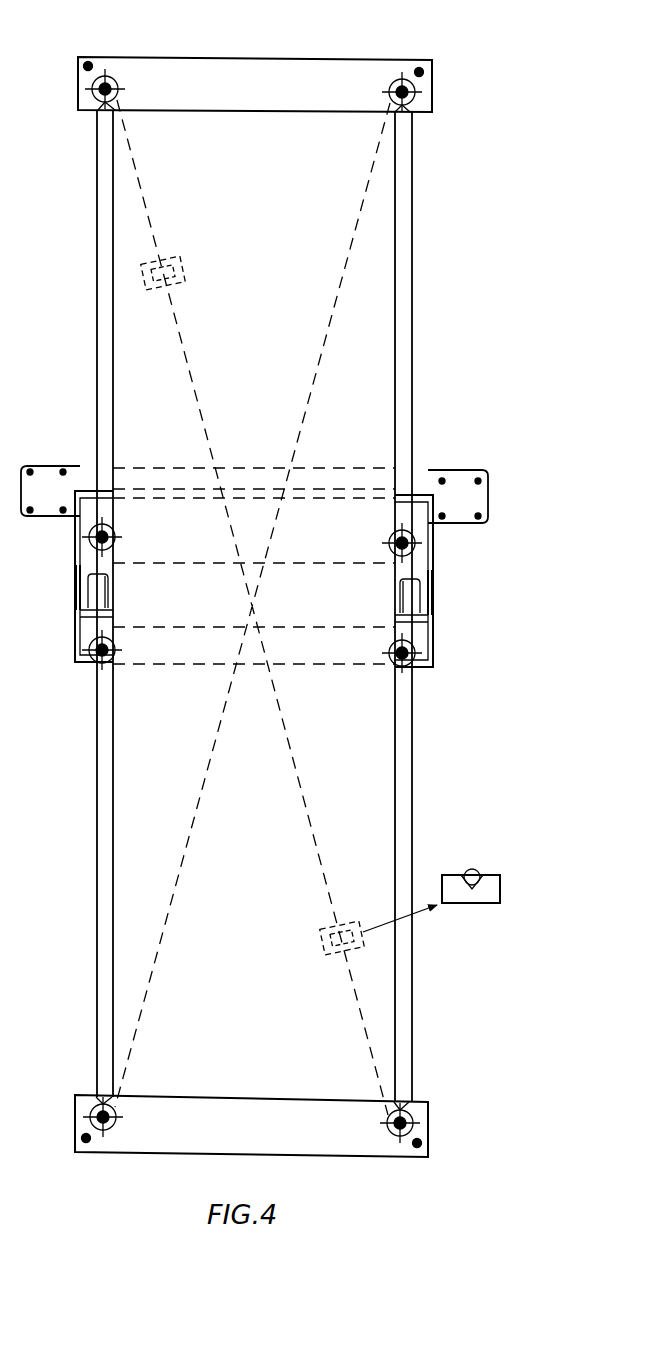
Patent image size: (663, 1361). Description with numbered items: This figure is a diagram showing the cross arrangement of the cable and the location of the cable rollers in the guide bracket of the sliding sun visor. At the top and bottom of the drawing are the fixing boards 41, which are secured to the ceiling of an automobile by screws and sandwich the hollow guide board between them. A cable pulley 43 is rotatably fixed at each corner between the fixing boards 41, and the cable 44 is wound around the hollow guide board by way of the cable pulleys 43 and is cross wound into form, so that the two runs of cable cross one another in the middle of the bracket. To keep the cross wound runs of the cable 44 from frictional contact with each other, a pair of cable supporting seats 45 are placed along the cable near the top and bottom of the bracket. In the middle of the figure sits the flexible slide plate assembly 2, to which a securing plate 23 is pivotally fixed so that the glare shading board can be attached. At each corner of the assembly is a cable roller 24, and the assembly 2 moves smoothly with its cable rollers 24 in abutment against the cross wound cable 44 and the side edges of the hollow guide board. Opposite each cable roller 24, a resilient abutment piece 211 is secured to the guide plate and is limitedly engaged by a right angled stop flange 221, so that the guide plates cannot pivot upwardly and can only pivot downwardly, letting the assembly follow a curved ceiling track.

The flexible slide plate assembly 2 is at (68, 571).
The securing plate 23 is at (478, 500).
The cable roller 24 is at (88, 537).
The fixing board 41 is at (177, 75).
The cable pulley 43 is at (112, 80).
The cable 44 is at (412, 385).
The cable supporting seat 45 is at (178, 265).
The resilient abutment piece 211 is at (78, 592).
The right angled stop flange 221 is at (78, 615).